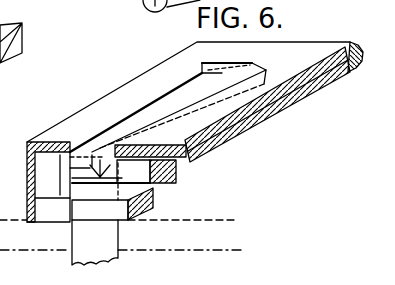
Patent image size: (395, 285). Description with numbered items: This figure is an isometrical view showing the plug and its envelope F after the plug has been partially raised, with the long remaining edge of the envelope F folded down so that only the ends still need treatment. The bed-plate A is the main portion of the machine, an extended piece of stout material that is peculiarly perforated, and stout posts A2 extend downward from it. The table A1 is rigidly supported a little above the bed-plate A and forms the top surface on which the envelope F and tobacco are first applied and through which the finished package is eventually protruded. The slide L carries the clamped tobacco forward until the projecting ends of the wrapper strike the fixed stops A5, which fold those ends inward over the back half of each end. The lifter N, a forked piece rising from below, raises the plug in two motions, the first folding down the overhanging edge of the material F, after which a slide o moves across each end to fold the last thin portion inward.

The table A1 is at (195, 102).
The stout posts A2 is at (48, 182).
The fixed stops A5 is at (48, 205).
The envelope F is at (128, 158).
The slide o is at (124, 171).
The slide L is at (112, 191).
The lifter N is at (95, 242).
The bed-plate A is at (122, 235).